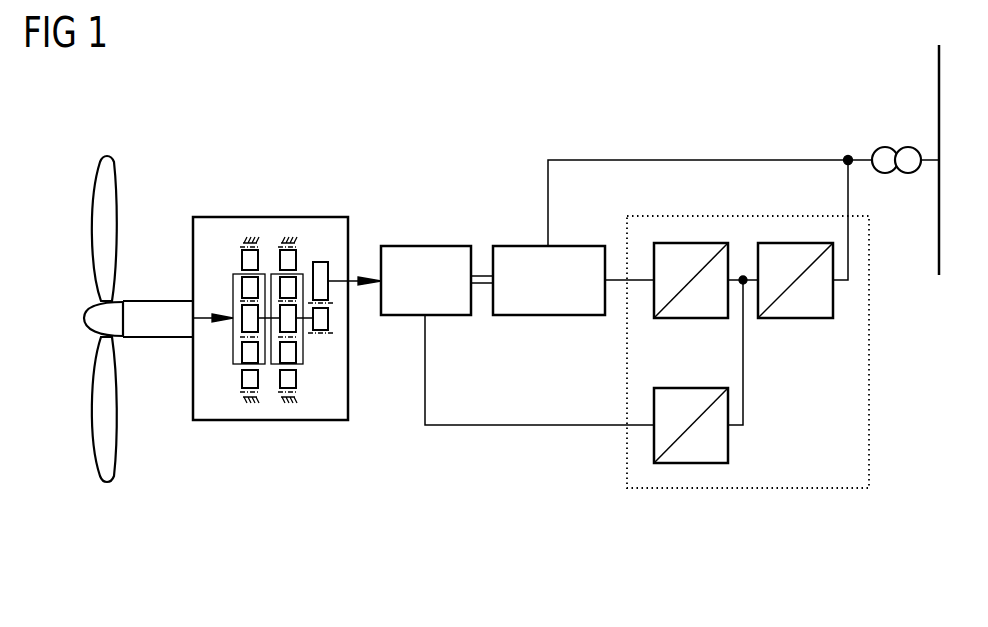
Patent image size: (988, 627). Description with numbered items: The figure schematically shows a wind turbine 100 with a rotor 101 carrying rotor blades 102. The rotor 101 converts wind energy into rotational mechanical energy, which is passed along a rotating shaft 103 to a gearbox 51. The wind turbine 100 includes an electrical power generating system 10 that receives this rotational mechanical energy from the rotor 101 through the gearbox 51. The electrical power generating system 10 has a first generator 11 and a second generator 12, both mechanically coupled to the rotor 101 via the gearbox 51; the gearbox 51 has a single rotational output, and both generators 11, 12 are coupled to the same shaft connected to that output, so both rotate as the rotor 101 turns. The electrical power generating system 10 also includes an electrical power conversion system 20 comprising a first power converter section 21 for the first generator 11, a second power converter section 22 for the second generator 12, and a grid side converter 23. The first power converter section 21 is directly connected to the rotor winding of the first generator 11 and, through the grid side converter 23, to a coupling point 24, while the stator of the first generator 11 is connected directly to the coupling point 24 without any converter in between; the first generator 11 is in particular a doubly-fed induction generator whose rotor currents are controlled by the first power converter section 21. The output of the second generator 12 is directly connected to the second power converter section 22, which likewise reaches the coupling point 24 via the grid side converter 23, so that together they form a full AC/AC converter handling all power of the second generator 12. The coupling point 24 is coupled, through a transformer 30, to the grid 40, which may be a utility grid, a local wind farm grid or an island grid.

The wind turbine 100 is at (580, 510).
The rotor 101 is at (82, 288).
The rotor blades 102 is at (115, 430).
The rotating shaft 103 is at (150, 298).
The gearbox 51 is at (270, 216).
The electrical power generating system 10 is at (655, 128).
The first generator 11 is at (522, 245).
The second generator 12 is at (425, 245).
The electrical power conversion system 20 is at (869, 393).
The first power converter section 21 is at (690, 320).
The second power converter section 22 is at (728, 443).
The grid side converter 23 is at (795, 320).
The coupling point 24 is at (848, 157).
The transformer 30 is at (907, 176).
The grid 40 is at (938, 68).